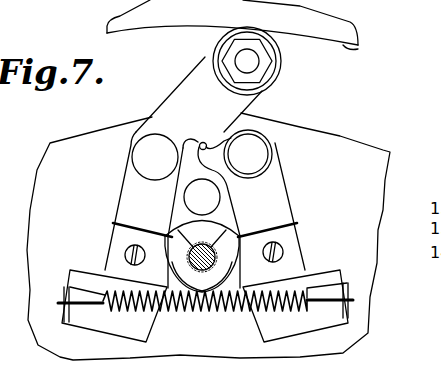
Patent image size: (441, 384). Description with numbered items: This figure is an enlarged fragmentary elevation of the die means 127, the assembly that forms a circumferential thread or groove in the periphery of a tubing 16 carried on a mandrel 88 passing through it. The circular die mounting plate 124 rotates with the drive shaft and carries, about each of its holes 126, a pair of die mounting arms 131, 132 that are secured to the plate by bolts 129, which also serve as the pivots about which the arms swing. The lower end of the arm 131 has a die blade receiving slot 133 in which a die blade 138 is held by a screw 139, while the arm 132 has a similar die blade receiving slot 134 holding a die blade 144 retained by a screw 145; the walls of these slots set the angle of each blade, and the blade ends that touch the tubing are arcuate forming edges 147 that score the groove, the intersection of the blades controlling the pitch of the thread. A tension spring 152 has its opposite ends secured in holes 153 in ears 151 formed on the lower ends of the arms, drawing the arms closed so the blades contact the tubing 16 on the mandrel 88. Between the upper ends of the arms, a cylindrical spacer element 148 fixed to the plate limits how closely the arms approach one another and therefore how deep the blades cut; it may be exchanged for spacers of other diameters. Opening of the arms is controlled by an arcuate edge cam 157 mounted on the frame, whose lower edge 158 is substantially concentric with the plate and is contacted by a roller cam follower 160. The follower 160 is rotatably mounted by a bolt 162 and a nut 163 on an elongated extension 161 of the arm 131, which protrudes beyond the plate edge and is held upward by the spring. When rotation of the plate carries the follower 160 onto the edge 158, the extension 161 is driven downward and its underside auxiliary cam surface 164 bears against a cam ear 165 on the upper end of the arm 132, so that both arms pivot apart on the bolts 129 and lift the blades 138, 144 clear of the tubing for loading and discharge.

The arcuate edge cam 157 is at (358, 28).
The lower edge 158 is at (366, 61).
The roller cam follower 160 is at (282, 74).
The elongated extension 161 is at (180, 90).
The bolt 162 is at (222, 67).
The nut 163 is at (234, 64).
The auxiliary cam surface 164 is at (201, 142).
The cam ear 165 is at (228, 154).
The die mounting plate 124 is at (383, 149).
The die means 127 is at (330, 160).
The bolts 129 is at (135, 152).
The die mounting arm 131 is at (124, 188).
The die mounting arm 132 is at (281, 199).
The cylindrical spacer element 148 is at (184, 194).
The tubing 16 is at (174, 218).
The mandrel 88 is at (228, 231).
The holes 126 is at (227, 209).
The die blade receiving slot 133 is at (113, 227).
The die blade receiving slot 134 is at (291, 222).
The die blade 138 is at (113, 238).
The screw 139 is at (124, 254).
The die blade 144 is at (292, 241).
The screw 145 is at (283, 252).
The arcuate forming edges 147 is at (205, 311).
The ears 151 is at (63, 326).
The tension spring 152 is at (175, 330).
The holes 153 is at (70, 290).